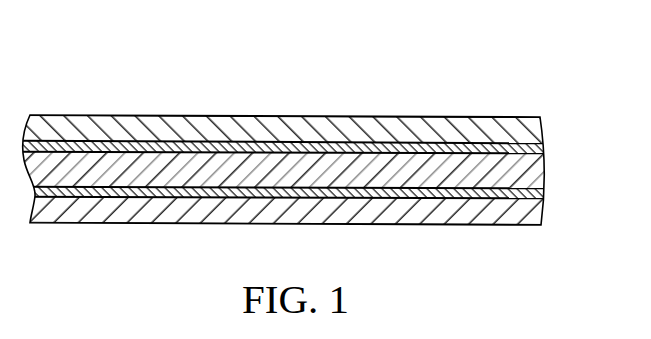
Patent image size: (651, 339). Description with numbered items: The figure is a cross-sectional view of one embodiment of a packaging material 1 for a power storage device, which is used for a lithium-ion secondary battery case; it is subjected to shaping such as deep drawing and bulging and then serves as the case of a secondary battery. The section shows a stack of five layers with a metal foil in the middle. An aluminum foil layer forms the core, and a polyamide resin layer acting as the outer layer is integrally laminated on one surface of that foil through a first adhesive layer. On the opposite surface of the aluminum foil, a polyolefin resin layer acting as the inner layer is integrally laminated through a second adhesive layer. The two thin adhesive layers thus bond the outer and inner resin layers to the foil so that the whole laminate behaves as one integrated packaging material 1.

The packaging material for a power storage device 1 is at (490, 85).